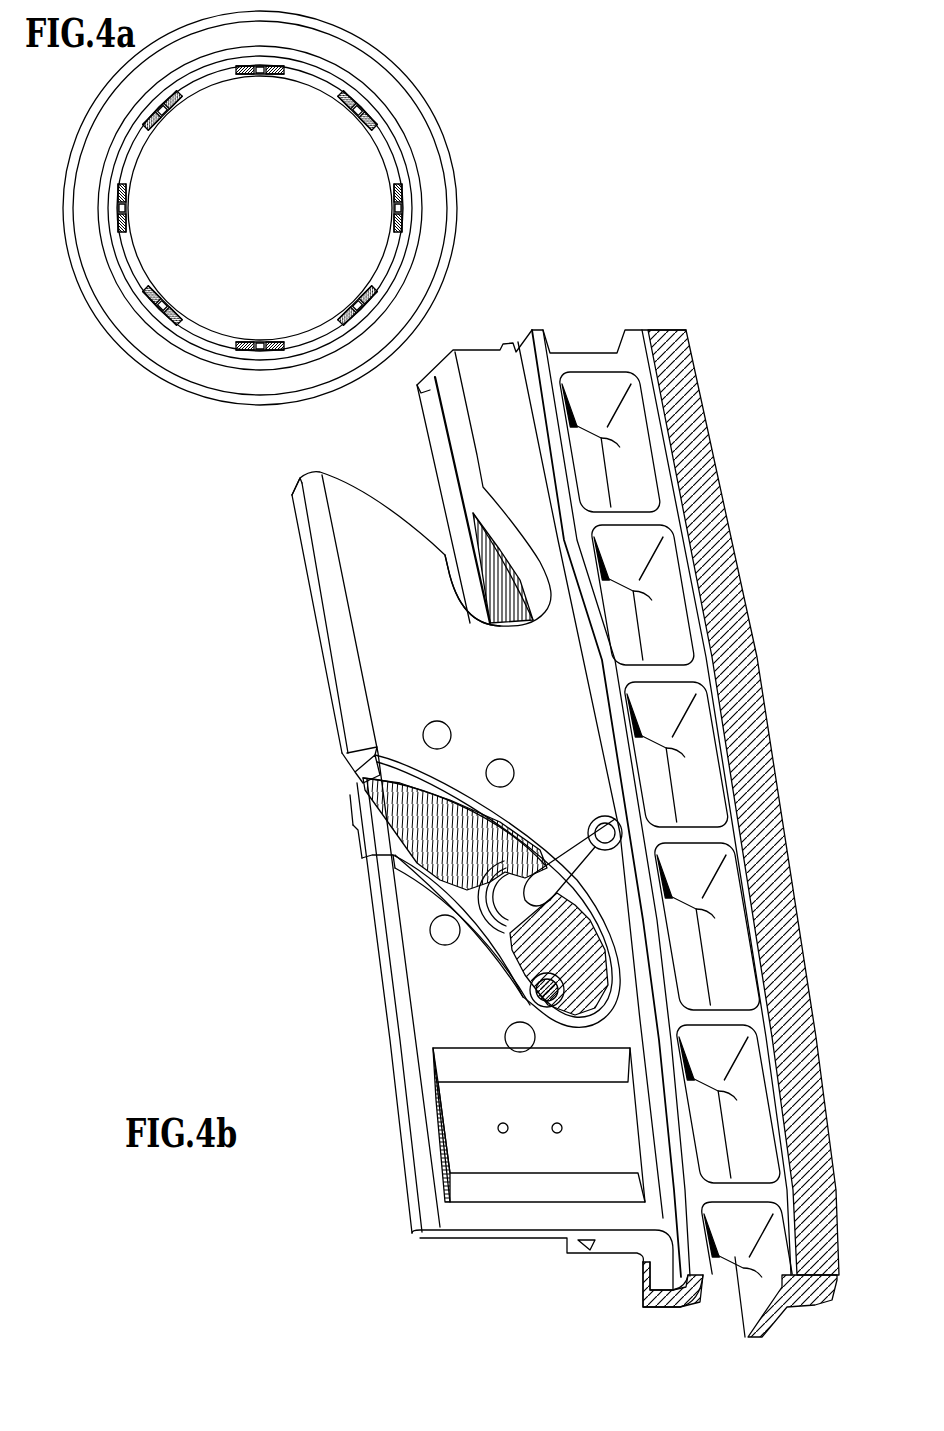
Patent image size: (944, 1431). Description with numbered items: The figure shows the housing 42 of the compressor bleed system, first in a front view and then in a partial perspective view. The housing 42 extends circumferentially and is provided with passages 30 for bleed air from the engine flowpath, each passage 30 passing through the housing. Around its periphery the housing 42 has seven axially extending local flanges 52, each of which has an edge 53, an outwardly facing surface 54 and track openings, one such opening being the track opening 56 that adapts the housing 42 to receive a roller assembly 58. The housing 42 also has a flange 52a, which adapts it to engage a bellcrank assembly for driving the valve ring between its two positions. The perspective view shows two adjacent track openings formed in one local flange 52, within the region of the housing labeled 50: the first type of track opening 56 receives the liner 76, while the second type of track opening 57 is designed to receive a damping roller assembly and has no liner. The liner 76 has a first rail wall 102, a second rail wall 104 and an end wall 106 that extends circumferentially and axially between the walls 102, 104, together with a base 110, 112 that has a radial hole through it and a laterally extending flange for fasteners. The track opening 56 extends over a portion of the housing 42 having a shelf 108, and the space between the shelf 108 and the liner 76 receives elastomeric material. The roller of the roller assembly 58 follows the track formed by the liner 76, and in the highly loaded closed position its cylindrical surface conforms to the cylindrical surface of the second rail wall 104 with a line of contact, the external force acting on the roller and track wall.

In FIG. 4b, the passage 30 is at (640, 482).
In FIG. 4a, the housing 42 is at (455, 122).
In FIG. 4b, the housing 42 is at (355, 463).
In FIG. 4b, the pocket housing of ring 50 is at (583, 372).
In FIG. 4a, the local flange 52 is at (247, 78).
In FIG. 4b, the local flange 52 is at (487, 390).
In FIG. 4a, the flange 52a is at (362, 297).
In FIG. 4b, the edge 53 is at (308, 577).
In FIG. 4b, the outwardly facing surface 54 is at (421, 659).
In FIG. 4b, the track opening 56 is at (353, 763).
In FIG. 4b, the track opening 57 is at (423, 494).
In FIG. 4b, the roller assembly 58 is at (565, 828).
In FIG. 4b, the liner 76 is at (348, 797).
In FIG. 4b, the first rail wall 102 is at (470, 808).
In FIG. 4b, the second rail wall 104 is at (420, 880).
In FIG. 4b, the end wall 106 is at (620, 1010).
In FIG. 4b, the shelf 108 is at (510, 580).
In FIG. 4b, the base 110 is at (350, 823).
In FIG. 4b, the base 112 is at (372, 855).